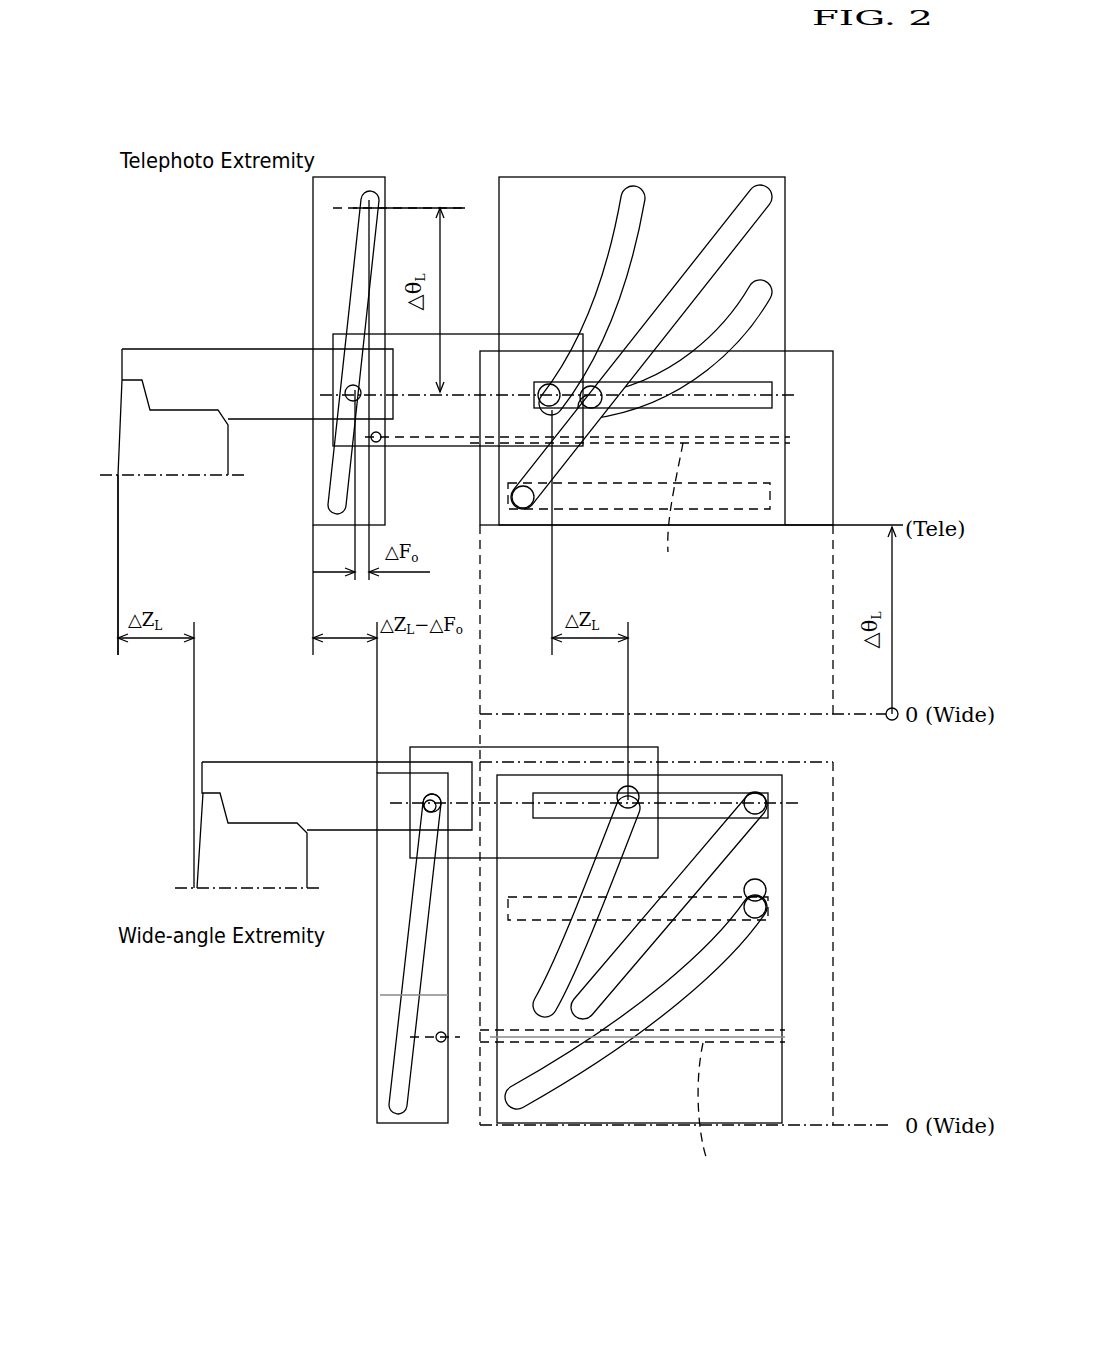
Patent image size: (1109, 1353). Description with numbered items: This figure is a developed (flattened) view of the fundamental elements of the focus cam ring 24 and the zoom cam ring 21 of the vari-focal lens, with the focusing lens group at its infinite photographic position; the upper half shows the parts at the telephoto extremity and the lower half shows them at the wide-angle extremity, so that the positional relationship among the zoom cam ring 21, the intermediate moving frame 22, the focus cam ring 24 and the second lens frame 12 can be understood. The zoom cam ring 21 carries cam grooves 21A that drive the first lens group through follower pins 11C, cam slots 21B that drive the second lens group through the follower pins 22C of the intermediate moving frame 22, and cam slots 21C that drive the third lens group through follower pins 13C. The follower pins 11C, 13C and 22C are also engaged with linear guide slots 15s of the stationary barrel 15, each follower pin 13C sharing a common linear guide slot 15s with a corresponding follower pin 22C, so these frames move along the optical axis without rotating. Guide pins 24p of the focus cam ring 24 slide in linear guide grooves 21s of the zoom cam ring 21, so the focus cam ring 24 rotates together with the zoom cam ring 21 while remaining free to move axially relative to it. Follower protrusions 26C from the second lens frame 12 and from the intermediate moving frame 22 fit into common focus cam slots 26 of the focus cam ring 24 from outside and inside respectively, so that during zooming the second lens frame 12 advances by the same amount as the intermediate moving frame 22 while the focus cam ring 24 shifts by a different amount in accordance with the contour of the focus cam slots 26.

The second lens frame 12 is at (180, 348).
The intermediate moving frame 22 is at (470, 334).
The focus cam ring 24 is at (350, 185).
The focus cam slots 26 is at (356, 283).
The follower protrusions 26C is at (347, 390).
The guide pins 24p is at (376, 438).
The zoom cam ring 21 is at (768, 240).
The cam grooves 21A is at (773, 298).
The cam slots 21B is at (634, 198).
The cam slots 21C is at (755, 205).
The linear guide grooves 21s is at (688, 819).
The follower pins 22C is at (547, 384).
The follower pins 13C is at (600, 386).
The follower pins 11C is at (519, 503).
The stationary barrel 15 is at (803, 365).
The linear guide slots 15s is at (755, 482).